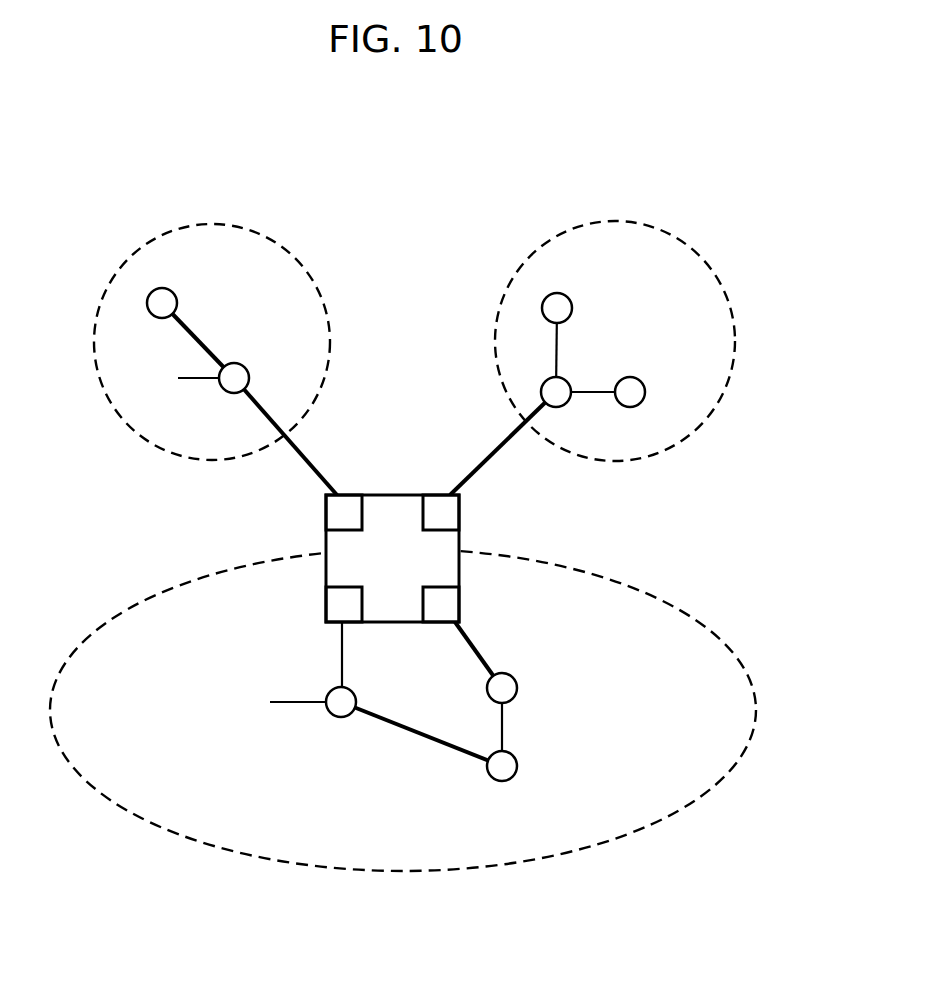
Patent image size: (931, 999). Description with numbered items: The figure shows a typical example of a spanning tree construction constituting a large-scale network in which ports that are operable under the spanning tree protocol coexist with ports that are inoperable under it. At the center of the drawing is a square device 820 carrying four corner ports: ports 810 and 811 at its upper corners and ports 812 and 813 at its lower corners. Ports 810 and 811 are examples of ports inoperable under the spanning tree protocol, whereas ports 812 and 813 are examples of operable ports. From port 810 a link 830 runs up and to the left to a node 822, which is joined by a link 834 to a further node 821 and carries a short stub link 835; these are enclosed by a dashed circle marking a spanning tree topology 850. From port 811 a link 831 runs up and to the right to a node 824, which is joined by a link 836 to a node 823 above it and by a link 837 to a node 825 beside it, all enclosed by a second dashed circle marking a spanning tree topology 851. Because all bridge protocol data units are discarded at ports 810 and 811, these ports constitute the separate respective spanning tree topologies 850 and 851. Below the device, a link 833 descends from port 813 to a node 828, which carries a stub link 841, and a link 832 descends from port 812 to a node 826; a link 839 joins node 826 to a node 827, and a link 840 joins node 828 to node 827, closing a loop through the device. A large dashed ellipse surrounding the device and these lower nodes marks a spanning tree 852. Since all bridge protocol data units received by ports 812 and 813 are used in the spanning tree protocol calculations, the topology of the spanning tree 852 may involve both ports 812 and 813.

The port 810 is at (326, 527).
The port 811 is at (459, 513).
The port 812 is at (459, 605).
The port 813 is at (326, 607).
The router 820 is at (390, 495).
The node 821 is at (176, 295).
The node 822 is at (250, 373).
The node 823 is at (562, 293).
The node 824 is at (570, 387).
The node 825 is at (643, 383).
The node 826 is at (512, 675).
The node 827 is at (516, 759).
The node 828 is at (338, 718).
The link 830 is at (314, 468).
The link 831 is at (482, 450).
The link 832 is at (471, 648).
The link 833 is at (342, 655).
The link 834 is at (204, 345).
The link 835 is at (197, 379).
The link 836 is at (557, 345).
The link 837 is at (592, 394).
The link 839 is at (503, 722).
The link 840 is at (406, 730).
The link 841 is at (287, 704).
The spanning tree topology 850 is at (276, 243).
The spanning tree topology 851 is at (662, 228).
The spanning tree 852 is at (650, 598).